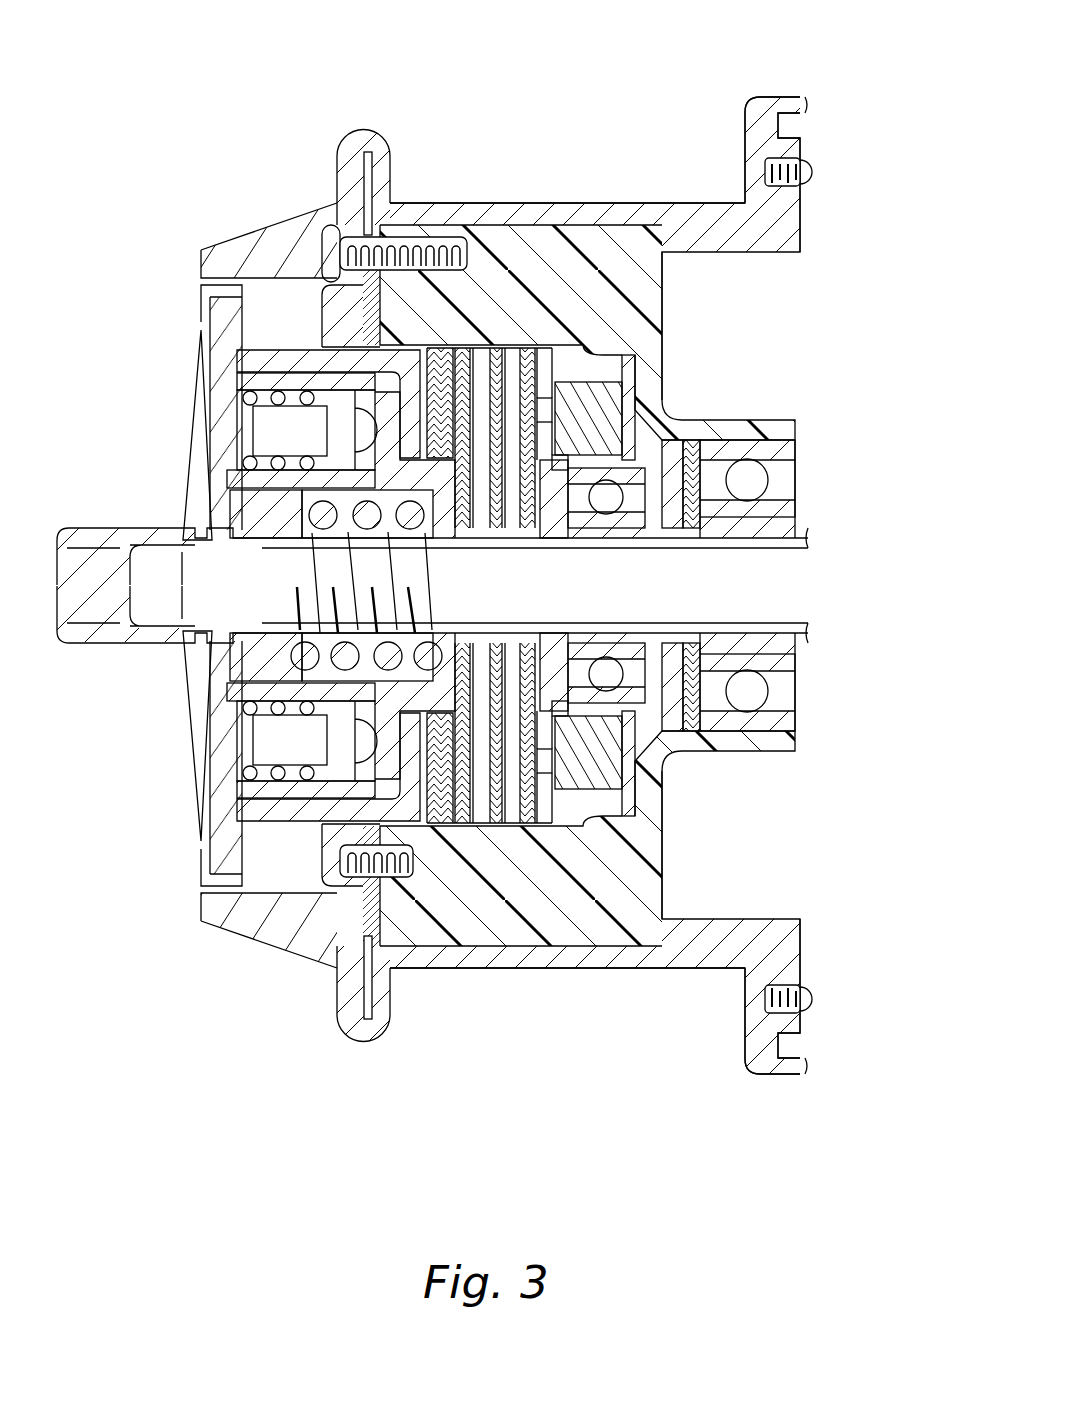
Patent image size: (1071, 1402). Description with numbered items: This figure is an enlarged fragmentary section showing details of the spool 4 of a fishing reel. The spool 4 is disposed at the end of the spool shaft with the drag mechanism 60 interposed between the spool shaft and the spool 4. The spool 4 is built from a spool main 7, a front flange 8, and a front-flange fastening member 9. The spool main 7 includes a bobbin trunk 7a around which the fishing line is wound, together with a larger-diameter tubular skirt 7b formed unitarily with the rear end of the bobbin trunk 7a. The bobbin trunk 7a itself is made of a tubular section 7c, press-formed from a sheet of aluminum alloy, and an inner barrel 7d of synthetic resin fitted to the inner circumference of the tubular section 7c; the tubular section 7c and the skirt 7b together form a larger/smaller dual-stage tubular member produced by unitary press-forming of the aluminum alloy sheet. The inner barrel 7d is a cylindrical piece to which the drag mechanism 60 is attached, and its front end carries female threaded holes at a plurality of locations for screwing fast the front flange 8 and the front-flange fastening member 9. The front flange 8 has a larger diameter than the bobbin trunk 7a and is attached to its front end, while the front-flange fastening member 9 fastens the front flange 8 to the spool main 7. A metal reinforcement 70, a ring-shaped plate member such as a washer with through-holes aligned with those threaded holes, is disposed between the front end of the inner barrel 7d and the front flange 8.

The spool 4 is at (426, 537).
The spool main 7 is at (563, 190).
The bobbin trunk 7a is at (668, 203).
The tubular skirt 7b is at (778, 97).
The tubular section 7c is at (432, 203).
The inner barrel 7d is at (664, 290).
The front flange 8 is at (356, 130).
The front-flange fastening member 9 is at (253, 228).
The drag mechanism 60 is at (570, 806).
The metal reinforcement 70 is at (363, 313).